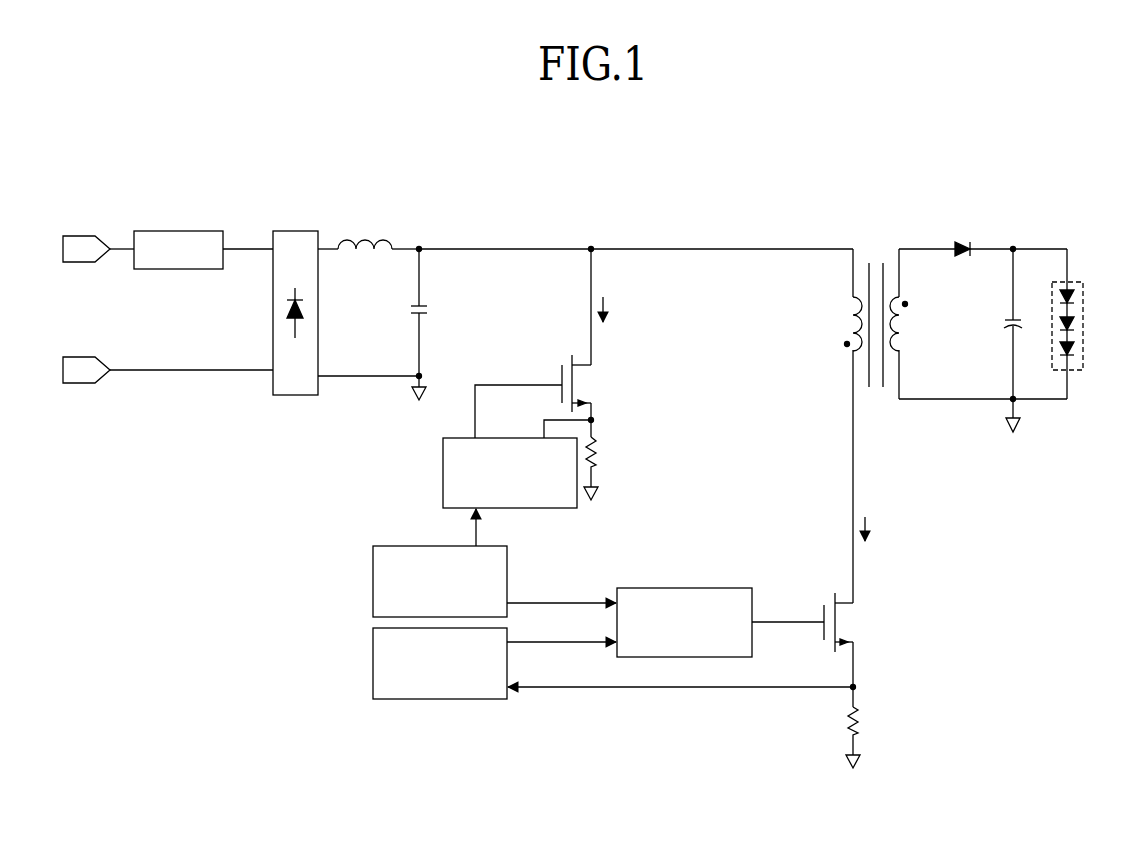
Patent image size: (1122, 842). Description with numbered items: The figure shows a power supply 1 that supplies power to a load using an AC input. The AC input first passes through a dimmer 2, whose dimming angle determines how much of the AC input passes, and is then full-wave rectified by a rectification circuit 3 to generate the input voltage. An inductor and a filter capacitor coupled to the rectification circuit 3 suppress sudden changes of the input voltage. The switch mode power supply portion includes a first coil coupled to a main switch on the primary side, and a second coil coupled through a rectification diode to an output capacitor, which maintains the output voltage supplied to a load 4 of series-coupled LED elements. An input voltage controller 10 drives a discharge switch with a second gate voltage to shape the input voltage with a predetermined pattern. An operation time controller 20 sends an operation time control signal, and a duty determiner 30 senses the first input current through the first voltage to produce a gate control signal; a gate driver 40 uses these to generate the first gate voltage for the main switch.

The power supply 1 is at (817, 176).
The dimmer 2 is at (193, 231).
The rectification circuit 3 is at (298, 231).
The load 4 is at (1083, 322).
The input voltage controller 10 is at (443, 472).
The operation time controller 20 is at (373, 580).
The duty determiner 30 is at (373, 663).
The gate driver 40 is at (685, 588).